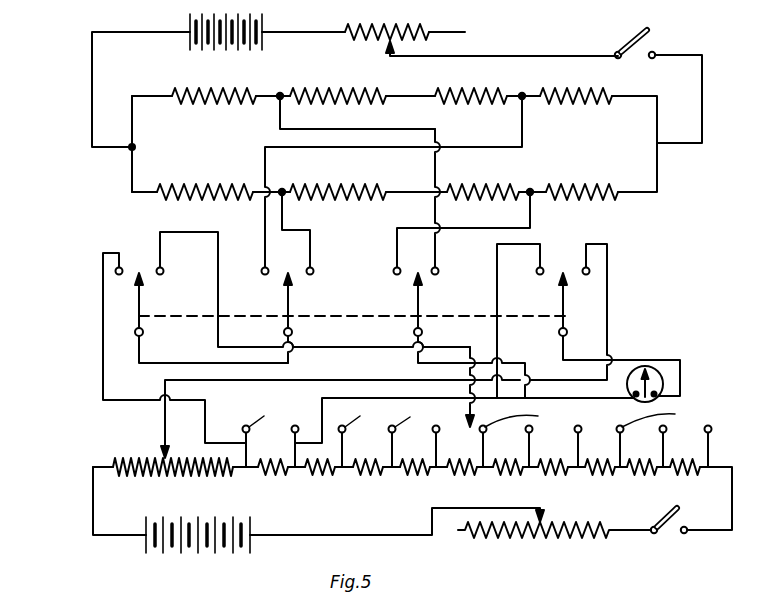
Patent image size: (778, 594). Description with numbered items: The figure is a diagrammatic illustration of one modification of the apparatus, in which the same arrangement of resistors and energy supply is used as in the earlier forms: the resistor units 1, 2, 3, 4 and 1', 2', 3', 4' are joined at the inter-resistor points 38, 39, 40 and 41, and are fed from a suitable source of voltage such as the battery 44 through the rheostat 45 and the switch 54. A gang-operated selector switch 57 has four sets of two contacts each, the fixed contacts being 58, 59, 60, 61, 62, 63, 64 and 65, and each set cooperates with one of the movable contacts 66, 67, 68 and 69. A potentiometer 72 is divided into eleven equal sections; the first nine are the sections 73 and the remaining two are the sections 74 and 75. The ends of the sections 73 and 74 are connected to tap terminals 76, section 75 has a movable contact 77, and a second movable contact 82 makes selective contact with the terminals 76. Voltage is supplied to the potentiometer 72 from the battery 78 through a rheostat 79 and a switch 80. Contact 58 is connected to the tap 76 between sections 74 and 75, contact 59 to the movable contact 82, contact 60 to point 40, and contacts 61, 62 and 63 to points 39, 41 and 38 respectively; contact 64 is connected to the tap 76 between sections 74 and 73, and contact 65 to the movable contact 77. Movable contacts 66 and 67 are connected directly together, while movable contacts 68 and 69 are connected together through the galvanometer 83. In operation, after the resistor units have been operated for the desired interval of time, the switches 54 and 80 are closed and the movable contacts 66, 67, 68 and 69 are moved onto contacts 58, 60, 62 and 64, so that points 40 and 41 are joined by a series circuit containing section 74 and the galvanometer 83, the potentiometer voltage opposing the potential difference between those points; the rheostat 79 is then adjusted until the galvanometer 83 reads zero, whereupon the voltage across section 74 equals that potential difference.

The resistor 1 is at (338, 81).
The resistor 2 is at (214, 81).
The resistor 3 is at (576, 83).
The resistor 4 is at (471, 81).
The resistor 1' is at (205, 174).
The resistor 2' is at (338, 176).
The resistor 3' is at (483, 176).
The resistor 4' is at (582, 170).
The inter-resistor point 38 is at (282, 93).
The inter-resistor point 39 is at (285, 189).
The inter-resistor point 40 is at (522, 93).
The inter-resistor point 41 is at (531, 189).
The battery 44 is at (188, 42).
The rheostat 45 is at (430, 16).
The switch 54 is at (632, 42).
The gang-operated selector switch 57 is at (570, 318).
The contact 58 is at (118, 276).
The contact 59 is at (164, 270).
The contact 60 is at (261, 271).
The contact 61 is at (314, 270).
The contact 62 is at (393, 271).
The contact 63 is at (439, 271).
The contact 64 is at (536, 273).
The contact 65 is at (584, 275).
The movable contact 66 is at (144, 332).
The movable contact 67 is at (293, 332).
The movable contact 68 is at (413, 332).
The movable contact 69 is at (558, 332).
The potentiometer 72 is at (92, 500).
The potentiometer section 73 is at (318, 478).
The potentiometer section 74 is at (295, 502).
The potentiometer section 75 is at (183, 478).
The tap terminal 76 is at (293, 425).
The movable contact 77 is at (166, 447).
The battery 78 is at (215, 560).
The rheostat 79 is at (568, 539).
The switch 80 is at (669, 535).
The second movable contact 82 is at (469, 418).
The galvanometer 83 is at (656, 368).